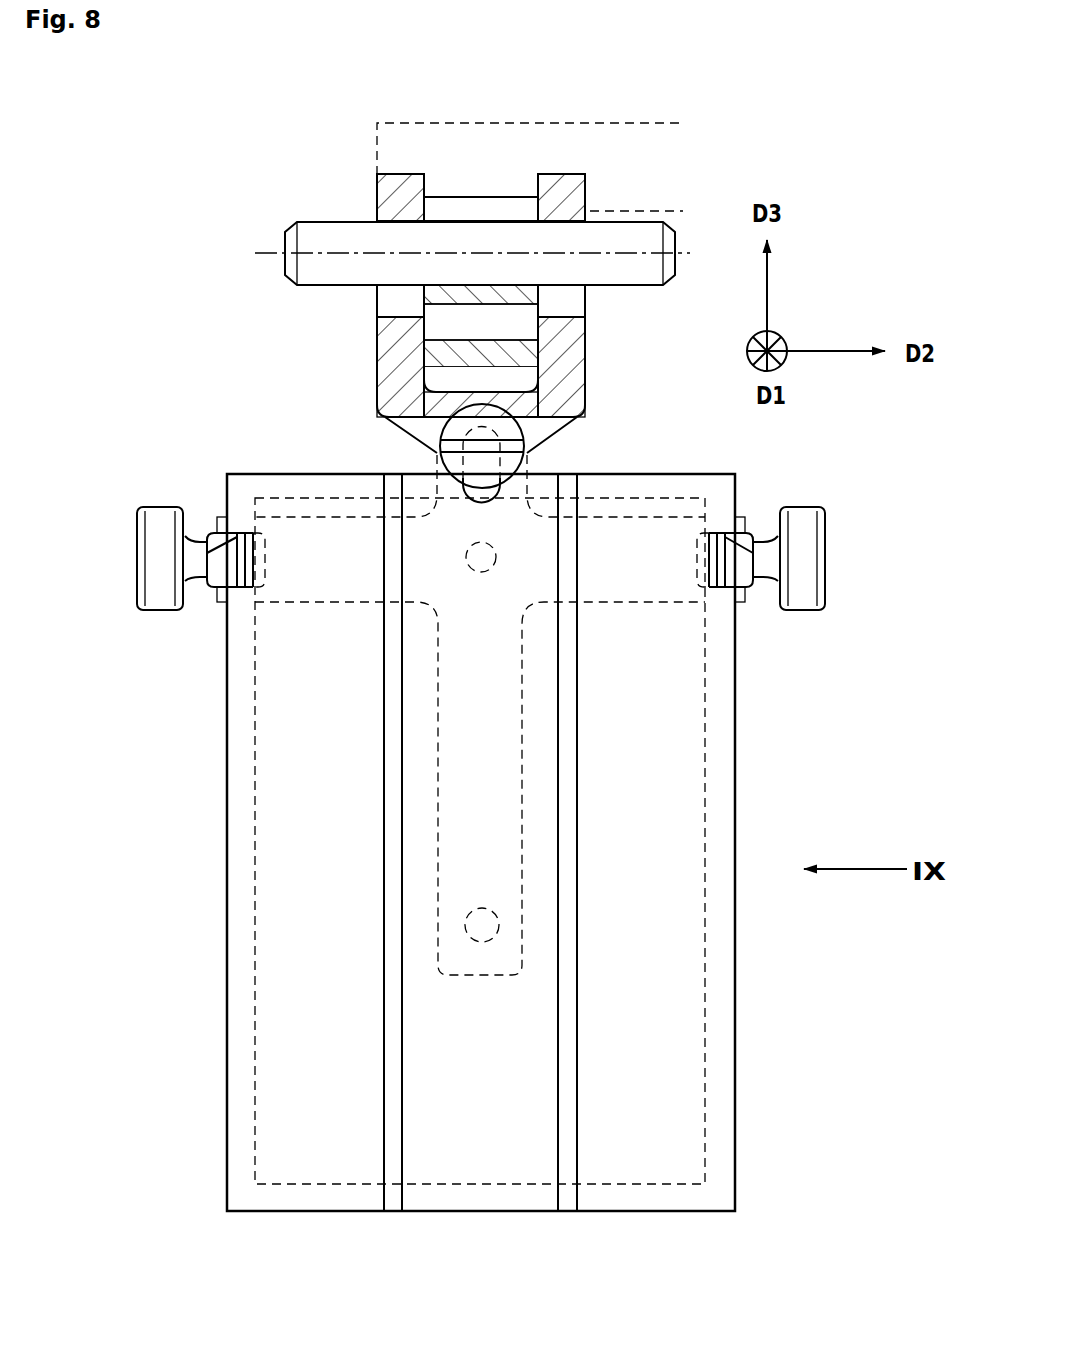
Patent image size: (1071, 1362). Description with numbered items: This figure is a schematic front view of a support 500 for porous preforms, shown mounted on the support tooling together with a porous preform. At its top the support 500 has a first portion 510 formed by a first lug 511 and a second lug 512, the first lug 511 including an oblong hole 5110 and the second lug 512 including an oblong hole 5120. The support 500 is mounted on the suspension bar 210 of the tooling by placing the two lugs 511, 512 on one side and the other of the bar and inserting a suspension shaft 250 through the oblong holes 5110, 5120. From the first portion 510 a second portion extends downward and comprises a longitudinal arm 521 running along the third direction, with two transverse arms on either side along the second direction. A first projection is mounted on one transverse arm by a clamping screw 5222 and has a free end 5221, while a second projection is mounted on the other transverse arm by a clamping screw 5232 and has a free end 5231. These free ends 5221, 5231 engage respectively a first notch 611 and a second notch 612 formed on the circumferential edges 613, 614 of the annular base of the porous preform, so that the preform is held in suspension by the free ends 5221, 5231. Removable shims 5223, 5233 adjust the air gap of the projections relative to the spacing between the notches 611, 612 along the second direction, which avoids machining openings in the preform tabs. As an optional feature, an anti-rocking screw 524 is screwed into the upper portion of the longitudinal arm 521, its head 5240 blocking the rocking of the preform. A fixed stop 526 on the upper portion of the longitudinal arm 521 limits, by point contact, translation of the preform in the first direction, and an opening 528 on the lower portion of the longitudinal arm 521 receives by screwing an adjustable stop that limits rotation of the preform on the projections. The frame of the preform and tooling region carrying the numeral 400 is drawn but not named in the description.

The support 500 is at (285, 150).
The first lug 511 is at (390, 195).
The second lug 512 is at (578, 184).
The suspension bar 210 is at (470, 202).
The suspension shaft 250 is at (320, 237).
The oblong hole 5110 is at (395, 302).
The oblong hole 5120 is at (572, 303).
The first portion 510 is at (598, 360).
The head 5240 is at (523, 434).
The anti-rocking screw 524 is at (440, 441).
The frame 400 is at (752, 1021).
The circumferential edge 613 is at (227, 950).
The circumferential edge 614 is at (737, 1110).
The longitudinal arm 521 is at (497, 795).
The fixed stop 526 is at (481, 572).
The opening 528 is at (482, 908).
The clamping screw 5222 is at (155, 560).
The free end 5221 is at (217, 574).
The removable shim 5223 is at (247, 531).
The first notch 611 is at (257, 558).
The clamping screw 5232 is at (807, 553).
The free end 5231 is at (745, 574).
The removable shim 5233 is at (719, 531).
The second notch 612 is at (697, 556).